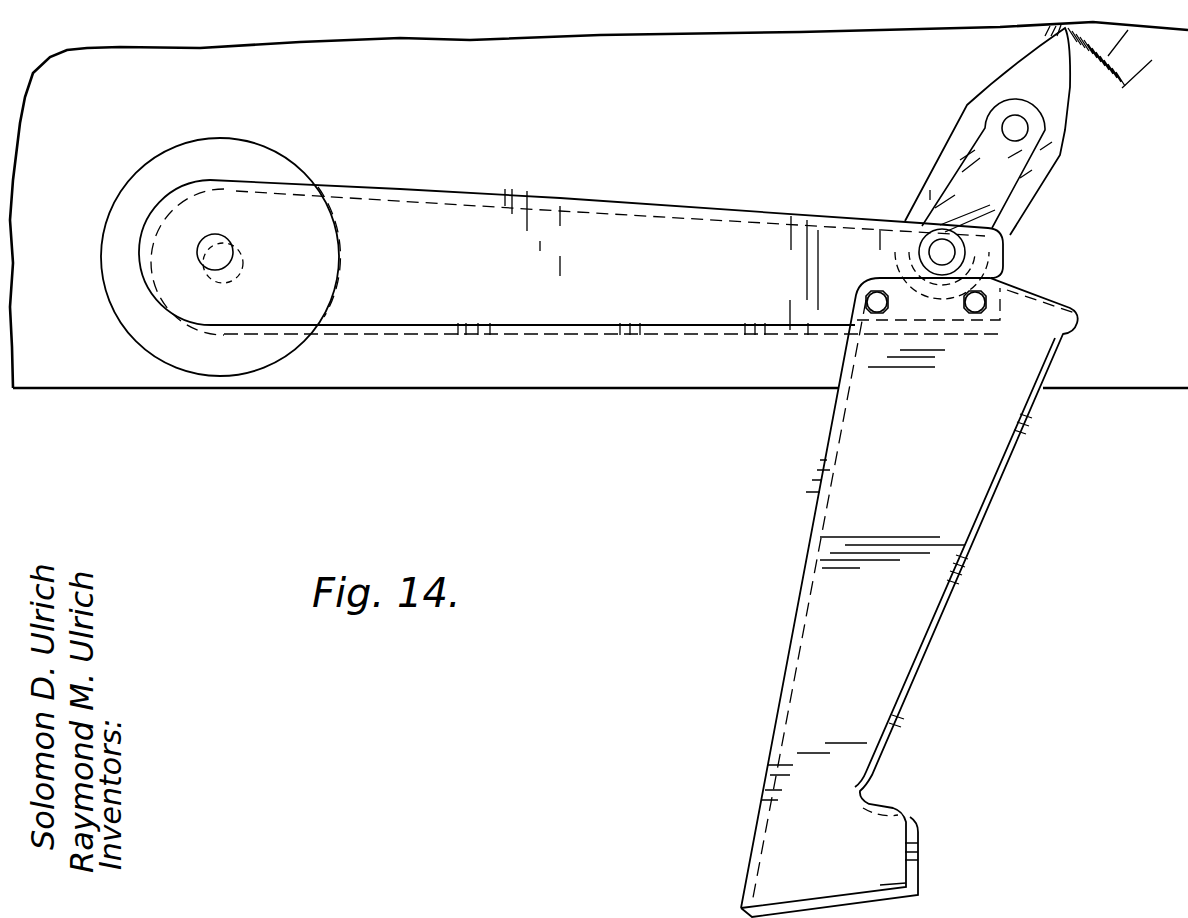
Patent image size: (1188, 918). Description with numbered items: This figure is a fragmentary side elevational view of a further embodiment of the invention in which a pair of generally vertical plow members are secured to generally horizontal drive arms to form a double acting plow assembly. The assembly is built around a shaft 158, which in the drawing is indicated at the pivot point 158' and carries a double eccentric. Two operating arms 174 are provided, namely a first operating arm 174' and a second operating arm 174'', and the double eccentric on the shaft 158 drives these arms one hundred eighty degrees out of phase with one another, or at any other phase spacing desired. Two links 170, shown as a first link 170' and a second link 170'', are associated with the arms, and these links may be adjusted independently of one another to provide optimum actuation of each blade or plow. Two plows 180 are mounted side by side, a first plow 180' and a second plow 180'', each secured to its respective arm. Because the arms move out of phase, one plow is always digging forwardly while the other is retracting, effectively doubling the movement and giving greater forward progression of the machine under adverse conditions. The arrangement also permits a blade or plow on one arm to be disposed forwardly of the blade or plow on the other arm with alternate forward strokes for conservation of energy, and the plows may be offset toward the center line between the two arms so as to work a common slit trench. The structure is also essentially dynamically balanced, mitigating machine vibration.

The shaft 158 is at (220, 257).
The pivot pin 158' is at (220, 257).
The arm 174 is at (571, 260).
The operating arm 174' is at (571, 240).
The operating arm 174'' is at (606, 349).
The slotted link and pivot 170 is at (999, 162).
The link 170' is at (999, 162).
The link 170'' is at (1015, 241).
The leg 180 is at (896, 597).
The plow 180' is at (857, 593).
The plow 180'' is at (909, 597).